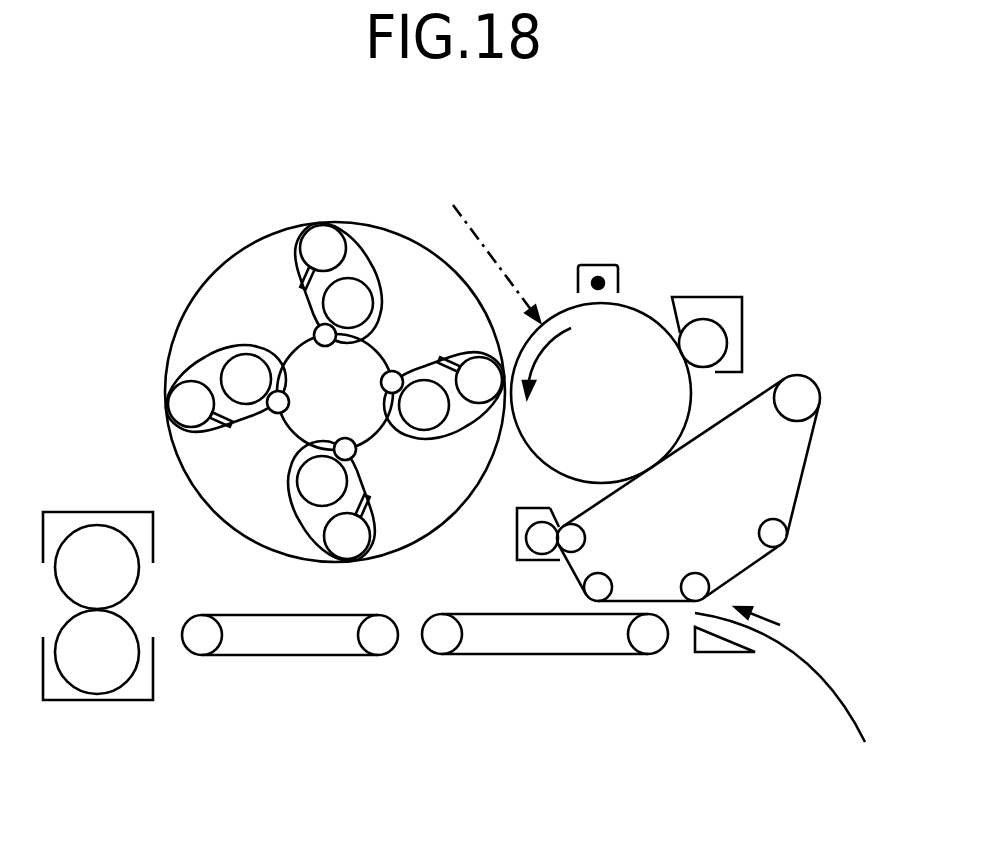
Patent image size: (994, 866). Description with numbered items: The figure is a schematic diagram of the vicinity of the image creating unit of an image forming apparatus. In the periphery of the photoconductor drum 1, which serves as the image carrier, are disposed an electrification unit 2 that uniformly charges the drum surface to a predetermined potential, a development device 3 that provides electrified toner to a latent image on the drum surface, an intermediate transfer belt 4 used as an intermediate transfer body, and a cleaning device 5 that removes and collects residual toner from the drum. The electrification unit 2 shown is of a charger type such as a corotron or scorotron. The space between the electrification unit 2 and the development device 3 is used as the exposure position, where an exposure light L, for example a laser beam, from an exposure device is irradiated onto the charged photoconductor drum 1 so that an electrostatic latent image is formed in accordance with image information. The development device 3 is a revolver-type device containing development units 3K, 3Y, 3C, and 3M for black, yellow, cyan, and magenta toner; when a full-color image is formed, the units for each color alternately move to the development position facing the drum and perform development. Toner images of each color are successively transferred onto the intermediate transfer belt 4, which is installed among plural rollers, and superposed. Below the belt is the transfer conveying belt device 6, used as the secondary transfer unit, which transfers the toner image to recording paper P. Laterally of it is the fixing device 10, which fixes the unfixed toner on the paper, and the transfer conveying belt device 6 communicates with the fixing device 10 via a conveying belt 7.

The photoconductor drum 1 is at (609, 412).
The electrification unit 2 is at (598, 265).
The development device 3 is at (209, 282).
The development unit for cyan toner 3C is at (208, 348).
The development unit for magenta toner 3M is at (378, 274).
The development unit for yellow toner 3Y is at (287, 486).
The development unit for black toner 3K is at (437, 438).
The intermediate transfer belt 4 is at (808, 460).
The cleaning device 5 is at (743, 312).
The transfer conveying belt device 6 is at (574, 657).
The conveying belt 7 is at (320, 657).
The fixing device 10 is at (71, 510).
The exposure light L is at (475, 214).
The recording paper P is at (824, 672).